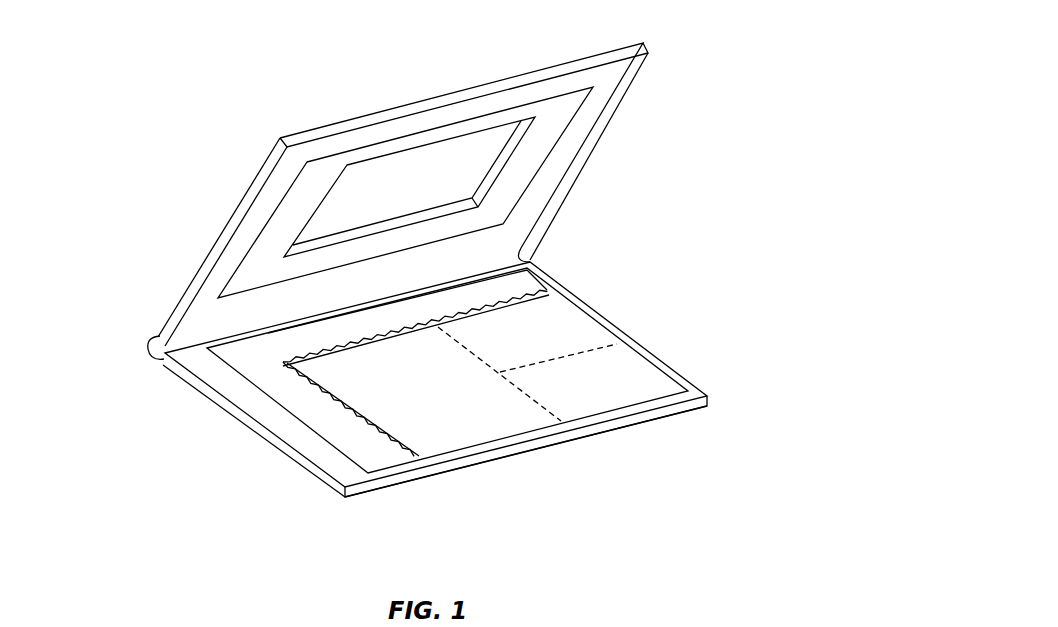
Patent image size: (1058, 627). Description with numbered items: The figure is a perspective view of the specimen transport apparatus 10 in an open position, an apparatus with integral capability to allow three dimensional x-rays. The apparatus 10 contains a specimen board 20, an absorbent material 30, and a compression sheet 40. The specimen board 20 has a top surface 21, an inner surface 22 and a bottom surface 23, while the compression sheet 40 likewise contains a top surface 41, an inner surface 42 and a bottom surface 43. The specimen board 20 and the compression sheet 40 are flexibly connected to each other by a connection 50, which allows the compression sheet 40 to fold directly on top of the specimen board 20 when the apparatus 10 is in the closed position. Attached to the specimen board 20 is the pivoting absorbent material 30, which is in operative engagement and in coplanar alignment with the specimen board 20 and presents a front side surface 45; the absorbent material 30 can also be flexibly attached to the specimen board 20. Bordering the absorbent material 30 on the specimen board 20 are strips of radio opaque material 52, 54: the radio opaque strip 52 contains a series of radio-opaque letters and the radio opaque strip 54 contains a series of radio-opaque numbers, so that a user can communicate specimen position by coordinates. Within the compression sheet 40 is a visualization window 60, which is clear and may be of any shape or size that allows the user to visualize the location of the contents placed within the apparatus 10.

The specimen transport apparatus 10 is at (104, 234).
The specimen board 20 is at (653, 356).
The top surface 21 is at (697, 391).
The inner surface 22 is at (677, 408).
The bottom surface 23 is at (573, 460).
The absorbent material 30 is at (570, 330).
The compression sheet 40 is at (650, 77).
The top surface 41 is at (230, 219).
The inner surface 42 is at (220, 236).
The bottom surface 43 is at (216, 266).
The front side surface 45 is at (467, 428).
The connection 50 is at (148, 350).
The radio opaque strip 52 is at (534, 266).
The radio opaque strip 54 is at (323, 430).
The visualization window 60 is at (432, 155).